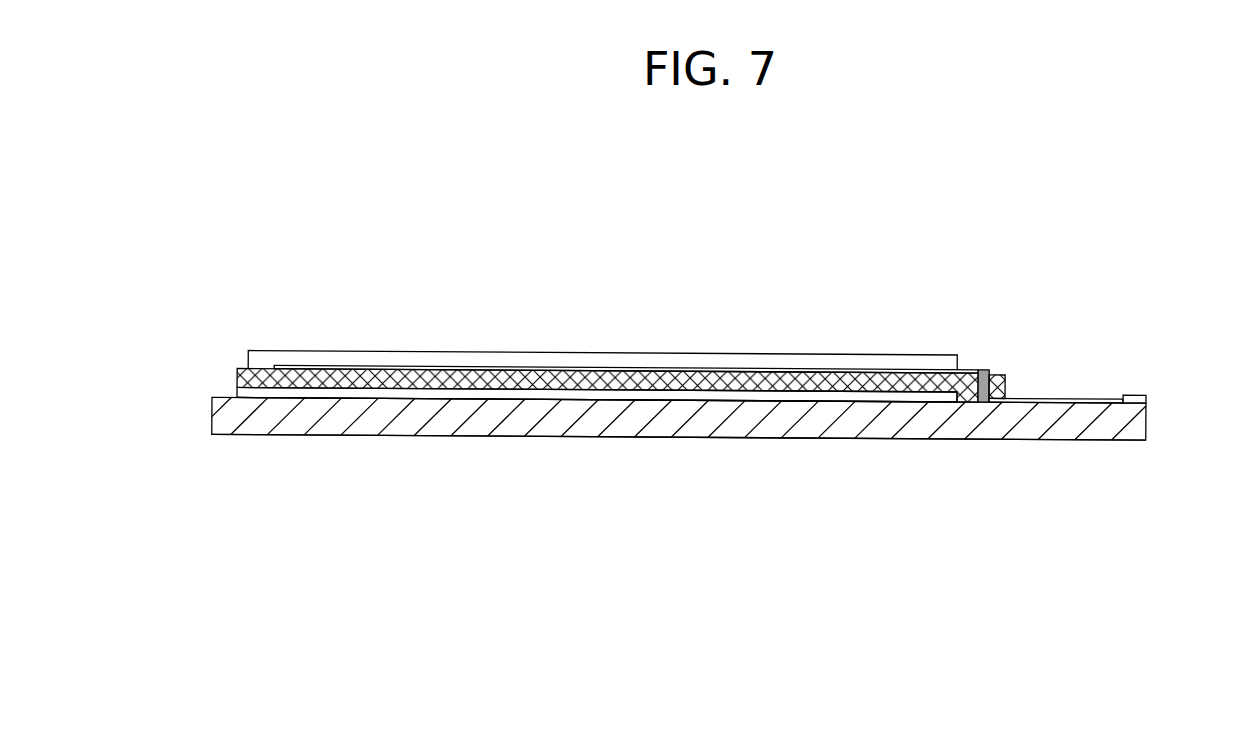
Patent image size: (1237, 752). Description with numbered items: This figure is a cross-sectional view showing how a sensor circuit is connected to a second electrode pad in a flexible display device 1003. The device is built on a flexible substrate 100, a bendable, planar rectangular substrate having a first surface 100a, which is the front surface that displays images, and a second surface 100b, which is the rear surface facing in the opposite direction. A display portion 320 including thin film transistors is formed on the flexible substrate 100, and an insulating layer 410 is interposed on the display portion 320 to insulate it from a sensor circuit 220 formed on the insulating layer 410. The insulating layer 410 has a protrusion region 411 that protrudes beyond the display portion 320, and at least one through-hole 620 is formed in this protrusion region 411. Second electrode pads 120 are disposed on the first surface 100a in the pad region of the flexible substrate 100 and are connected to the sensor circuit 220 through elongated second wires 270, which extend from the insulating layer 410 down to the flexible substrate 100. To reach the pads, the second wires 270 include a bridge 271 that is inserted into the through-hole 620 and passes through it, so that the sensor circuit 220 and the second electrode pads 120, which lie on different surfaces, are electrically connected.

The flexible display device 1003 is at (805, 318).
The flexible substrate 100 is at (470, 418).
The first surface 100a is at (733, 401).
The second surface 100b is at (748, 440).
The second electrode pads 120 is at (1133, 393).
The sensor circuit 220 is at (365, 360).
The second wires 270 is at (888, 370).
The bridge 271 is at (983, 375).
The display portion 320 is at (516, 393).
The insulating layer 410 is at (623, 369).
The protrusion region 411 is at (1000, 375).
The through-hole 620 is at (972, 400).